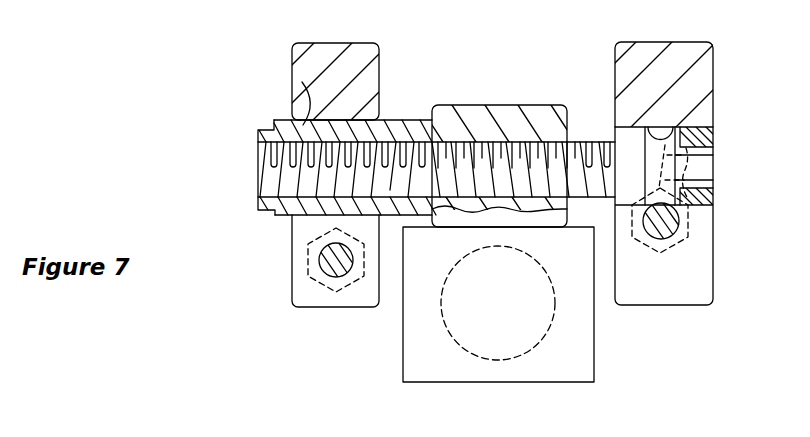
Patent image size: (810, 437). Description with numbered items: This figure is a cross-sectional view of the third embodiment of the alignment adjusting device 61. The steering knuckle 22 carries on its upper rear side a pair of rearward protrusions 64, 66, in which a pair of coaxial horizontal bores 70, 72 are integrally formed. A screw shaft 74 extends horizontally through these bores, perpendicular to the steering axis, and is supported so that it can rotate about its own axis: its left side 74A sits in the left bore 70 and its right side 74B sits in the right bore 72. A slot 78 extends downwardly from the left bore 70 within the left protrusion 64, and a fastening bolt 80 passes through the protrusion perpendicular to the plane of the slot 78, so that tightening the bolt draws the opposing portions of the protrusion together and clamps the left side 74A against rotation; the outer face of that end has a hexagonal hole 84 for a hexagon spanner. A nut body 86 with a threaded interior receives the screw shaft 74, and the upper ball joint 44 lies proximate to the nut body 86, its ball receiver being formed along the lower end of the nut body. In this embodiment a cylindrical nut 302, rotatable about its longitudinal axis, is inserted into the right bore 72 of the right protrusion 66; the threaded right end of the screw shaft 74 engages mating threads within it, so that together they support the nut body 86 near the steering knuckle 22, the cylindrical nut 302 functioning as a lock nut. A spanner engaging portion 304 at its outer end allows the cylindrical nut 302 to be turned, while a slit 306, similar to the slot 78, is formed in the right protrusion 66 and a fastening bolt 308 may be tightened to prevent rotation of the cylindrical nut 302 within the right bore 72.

The steering knuckle 22 is at (359, 43).
The upper ball joint 44 is at (478, 375).
The alignment adjusting device 61 is at (599, 43).
The left protrusion 64 is at (682, 45).
The right protrusion 66 is at (320, 50).
The left bore 70 is at (714, 136).
The right bore 72 is at (302, 82).
The screw shaft 74 is at (461, 143).
The left side of screw shaft 74A is at (750, 203).
The right side of screw shaft 74B is at (410, 157).
The slot 78 is at (660, 298).
The fastening bolt 80 is at (668, 236).
The hexagonal hole 84 is at (709, 168).
The nut body 86 is at (540, 104).
The cylindrical nut 302 is at (281, 119).
The spanner engaging portion 304 is at (262, 128).
The slit 306 is at (317, 301).
The fastening bolt 308 is at (315, 252).